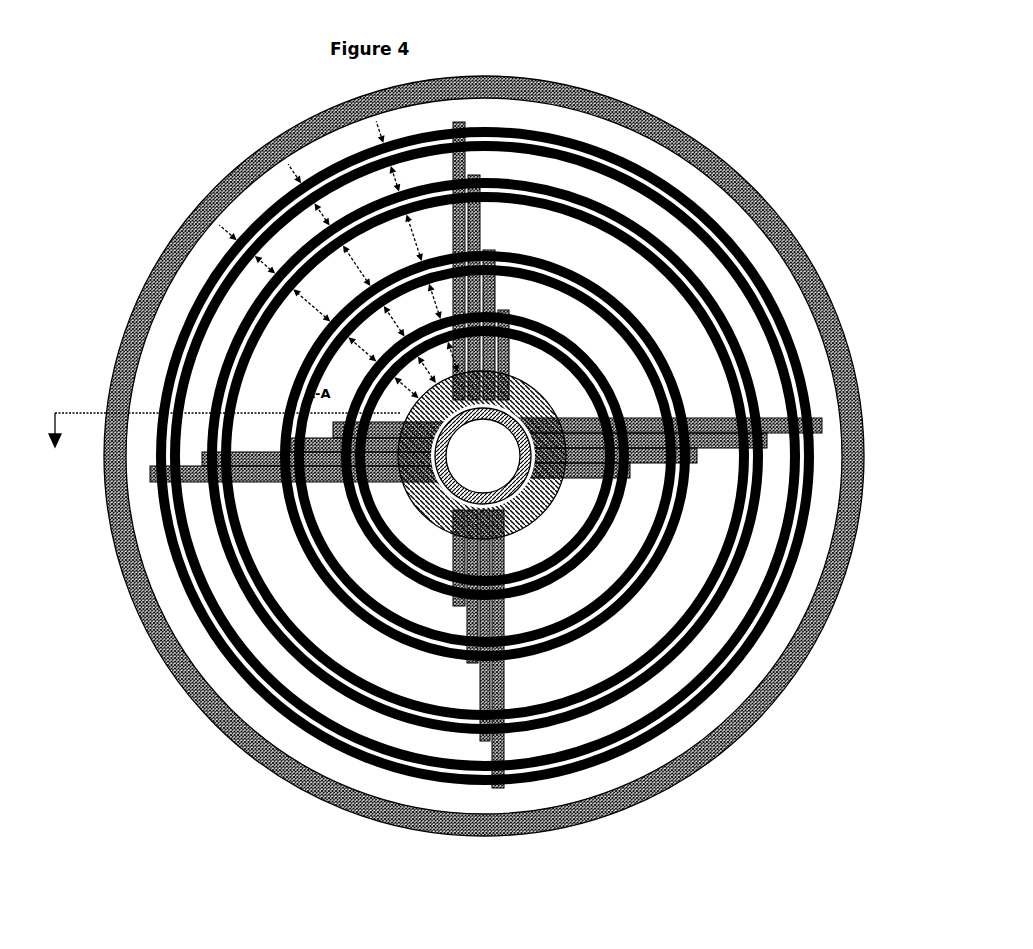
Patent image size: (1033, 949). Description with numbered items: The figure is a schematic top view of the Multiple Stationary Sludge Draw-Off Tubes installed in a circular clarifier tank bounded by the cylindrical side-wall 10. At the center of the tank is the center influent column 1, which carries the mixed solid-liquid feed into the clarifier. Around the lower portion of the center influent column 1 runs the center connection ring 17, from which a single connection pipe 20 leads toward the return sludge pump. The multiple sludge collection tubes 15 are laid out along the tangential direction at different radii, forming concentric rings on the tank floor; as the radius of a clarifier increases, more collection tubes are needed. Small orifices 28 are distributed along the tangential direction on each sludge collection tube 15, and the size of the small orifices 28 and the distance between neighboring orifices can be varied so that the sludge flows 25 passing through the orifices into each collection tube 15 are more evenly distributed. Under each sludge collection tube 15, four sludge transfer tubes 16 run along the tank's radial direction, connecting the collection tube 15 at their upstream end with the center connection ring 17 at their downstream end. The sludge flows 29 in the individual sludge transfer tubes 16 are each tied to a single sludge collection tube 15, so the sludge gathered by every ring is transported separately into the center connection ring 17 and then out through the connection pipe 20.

The center influent column 1 is at (515, 475).
The cylindrical side-wall 10 is at (862, 438).
The sludge collection tubes 15 is at (608, 377).
The sludge transfer tubes 16 is at (472, 716).
The center connection ring 17 is at (559, 491).
The connection pipe 20 is at (409, 489).
The sludge flow 25 is at (224, 228).
The small orifices 28 is at (388, 151).
The sludge flows in transfer tubes 29 is at (310, 464).